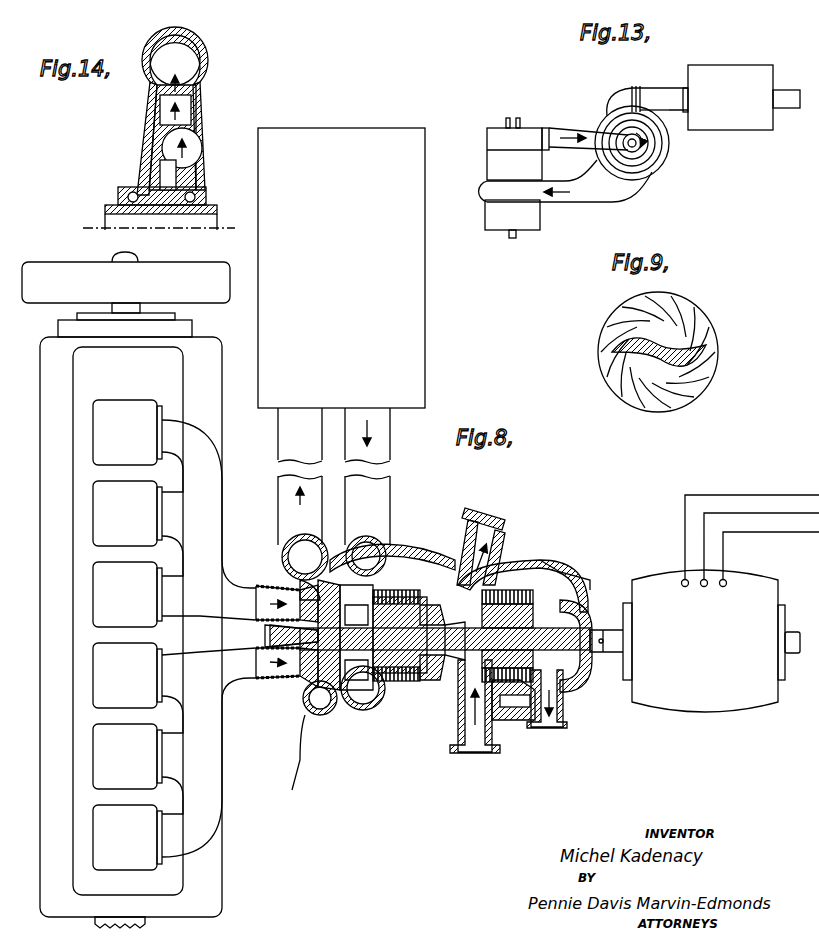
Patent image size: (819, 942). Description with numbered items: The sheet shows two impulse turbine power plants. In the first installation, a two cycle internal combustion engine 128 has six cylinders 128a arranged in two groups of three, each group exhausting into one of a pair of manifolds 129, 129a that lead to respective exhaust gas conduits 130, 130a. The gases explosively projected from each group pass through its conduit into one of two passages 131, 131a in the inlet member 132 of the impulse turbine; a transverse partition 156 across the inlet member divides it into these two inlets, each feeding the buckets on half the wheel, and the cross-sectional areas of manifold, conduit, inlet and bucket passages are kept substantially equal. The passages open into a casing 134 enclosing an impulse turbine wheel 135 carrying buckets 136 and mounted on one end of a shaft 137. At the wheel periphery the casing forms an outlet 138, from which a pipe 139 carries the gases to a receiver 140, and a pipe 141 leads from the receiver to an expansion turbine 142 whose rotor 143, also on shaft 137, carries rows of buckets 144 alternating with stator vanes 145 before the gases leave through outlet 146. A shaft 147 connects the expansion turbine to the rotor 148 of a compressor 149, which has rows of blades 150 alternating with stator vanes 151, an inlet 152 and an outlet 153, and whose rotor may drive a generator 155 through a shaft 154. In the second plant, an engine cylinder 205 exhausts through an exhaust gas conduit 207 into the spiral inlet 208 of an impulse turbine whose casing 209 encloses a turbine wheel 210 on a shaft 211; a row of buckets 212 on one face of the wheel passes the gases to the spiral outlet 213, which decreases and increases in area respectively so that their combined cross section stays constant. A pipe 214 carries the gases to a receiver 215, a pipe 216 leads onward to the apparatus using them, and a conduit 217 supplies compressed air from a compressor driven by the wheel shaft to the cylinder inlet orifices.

In FIG. 8, the internal combustion engine 128 is at (72, 600).
In FIG. 8, the cylinders 128a is at (140, 838).
In FIG. 8, the manifold 129 is at (202, 560).
In FIG. 8, the manifold 129a is at (200, 745).
In FIG. 8, the exhaust gas conduit 130 is at (268, 590).
In FIG. 8, the exhaust gas conduit 130a is at (265, 680).
In FIG. 8, the passage 131 is at (300, 588).
In FIG. 8, the passage 131a is at (305, 678).
In FIG. 8, the inlet member 132 is at (282, 636).
In FIG. 8, the casing 134 is at (322, 690).
In FIG. 9, the impulse turbine wheel 135 is at (655, 328).
In FIG. 8, the impulse turbine wheel 135 is at (345, 704).
In FIG. 9, the buckets 136 is at (668, 406).
In FIG. 8, the buckets 136 is at (340, 700).
In FIG. 8, the shaft 137 is at (372, 702).
In FIG. 8, the outlet 138 is at (300, 759).
In FIG. 8, the pipe 139 is at (278, 478).
In FIG. 8, the receiver 140 is at (405, 356).
In FIG. 8, the pipe 141 is at (378, 496).
In FIG. 8, the expansion turbine 142 is at (405, 580).
In FIG. 8, the rotor 143 is at (400, 700).
In FIG. 8, the buckets 144 is at (432, 690).
In FIG. 8, the stator vanes 145 is at (398, 588).
In FIG. 8, the outlet 146 is at (470, 548).
In FIG. 8, the shaft 147 is at (505, 580).
In FIG. 8, the rotor 148 is at (562, 580).
In FIG. 8, the compressor 149 is at (540, 560).
In FIG. 8, the blades 150 is at (515, 722).
In FIG. 8, the stator vanes 151 is at (512, 711).
In FIG. 8, the inlet 152 is at (472, 745).
In FIG. 8, the outlet 153 is at (549, 730).
In FIG. 8, the shaft 154 is at (606, 648).
In FIG. 8, the generator 155 is at (644, 696).
In FIG. 9, the transverse partition 156 is at (672, 345).
In FIG. 13, the cylinder 205 is at (490, 160).
In FIG. 13, the exhaust gas conduit 207 is at (558, 130).
In FIG. 14, the inlet 208 is at (190, 145).
In FIG. 13, the inlet 208 is at (645, 147).
In FIG. 14, the casing 209 is at (146, 127).
In FIG. 13, the casing 209 is at (662, 166).
In FIG. 14, the turbine wheel 210 is at (152, 160).
In FIG. 14, the shaft 211 is at (216, 213).
In FIG. 14, the buckets 212 is at (182, 108).
In FIG. 14, the outlet 213 is at (185, 60).
In FIG. 13, the outlet 213 is at (605, 164).
In FIG. 13, the pipe 214 is at (660, 74).
In FIG. 13, the receiver 215 is at (722, 75).
In FIG. 13, the pipe 216 is at (790, 96).
In FIG. 13, the conduit 217 is at (620, 200).